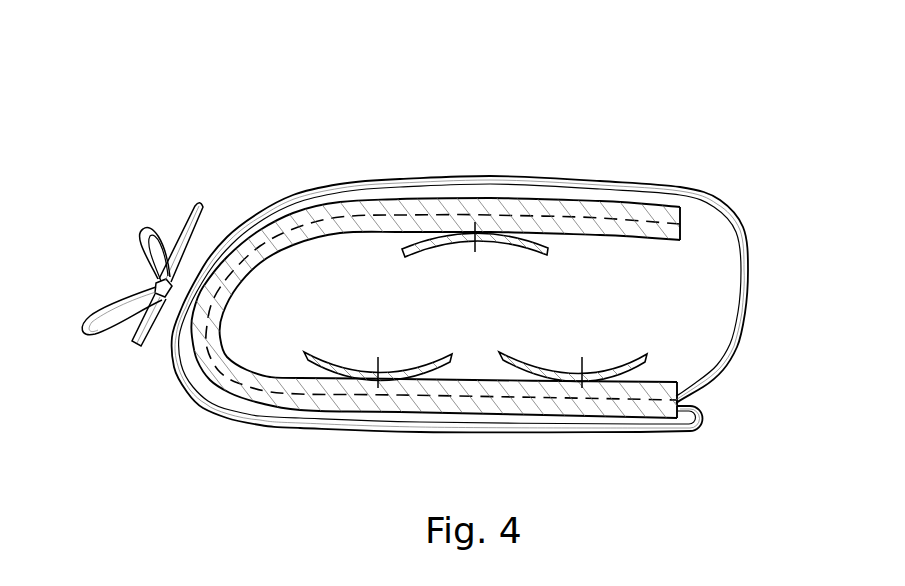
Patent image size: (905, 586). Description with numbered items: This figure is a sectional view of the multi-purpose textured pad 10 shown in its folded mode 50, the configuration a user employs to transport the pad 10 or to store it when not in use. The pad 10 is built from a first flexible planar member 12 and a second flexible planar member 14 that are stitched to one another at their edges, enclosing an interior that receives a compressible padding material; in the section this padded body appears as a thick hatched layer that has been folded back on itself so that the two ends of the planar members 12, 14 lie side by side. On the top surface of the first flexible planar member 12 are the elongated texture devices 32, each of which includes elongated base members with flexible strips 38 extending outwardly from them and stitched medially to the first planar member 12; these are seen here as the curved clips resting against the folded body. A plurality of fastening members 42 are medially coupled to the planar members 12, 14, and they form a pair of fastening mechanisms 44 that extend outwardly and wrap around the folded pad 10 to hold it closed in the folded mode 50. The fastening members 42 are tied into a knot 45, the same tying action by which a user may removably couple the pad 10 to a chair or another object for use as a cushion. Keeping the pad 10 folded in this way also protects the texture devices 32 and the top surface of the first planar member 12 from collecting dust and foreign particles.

The multi-purpose textured pad 10 is at (323, 128).
The first flexible planar member 12 is at (354, 240).
The second flexible planar member 14 is at (699, 218).
The elongated texture devices 32 is at (553, 262).
The flexible strips 38 is at (421, 249).
The fastening members 42 is at (702, 414).
The fastening mechanisms 44 is at (172, 212).
The knot 45 is at (135, 287).
The folded mode 50 is at (593, 160).